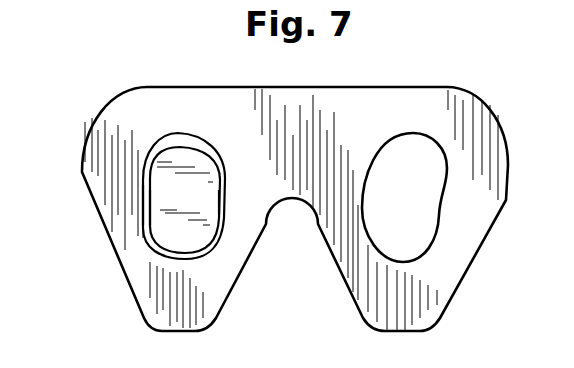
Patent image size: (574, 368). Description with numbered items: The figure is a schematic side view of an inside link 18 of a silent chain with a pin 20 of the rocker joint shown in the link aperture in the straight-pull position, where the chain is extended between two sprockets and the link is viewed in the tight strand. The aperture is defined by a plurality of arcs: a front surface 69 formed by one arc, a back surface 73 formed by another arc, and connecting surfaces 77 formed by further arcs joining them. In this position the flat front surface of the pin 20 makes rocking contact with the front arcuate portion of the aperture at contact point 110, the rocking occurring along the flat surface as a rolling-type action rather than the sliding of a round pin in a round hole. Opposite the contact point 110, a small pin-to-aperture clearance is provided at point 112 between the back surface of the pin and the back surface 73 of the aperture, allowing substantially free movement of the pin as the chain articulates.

The inside link 18 is at (373, 100).
The pin 20 is at (195, 233).
The front surface 69 is at (144, 172).
The back surface 73 is at (198, 143).
The connecting surfaces 77 is at (147, 138).
The contact point 110 is at (147, 208).
The clearance point 112 is at (224, 197).